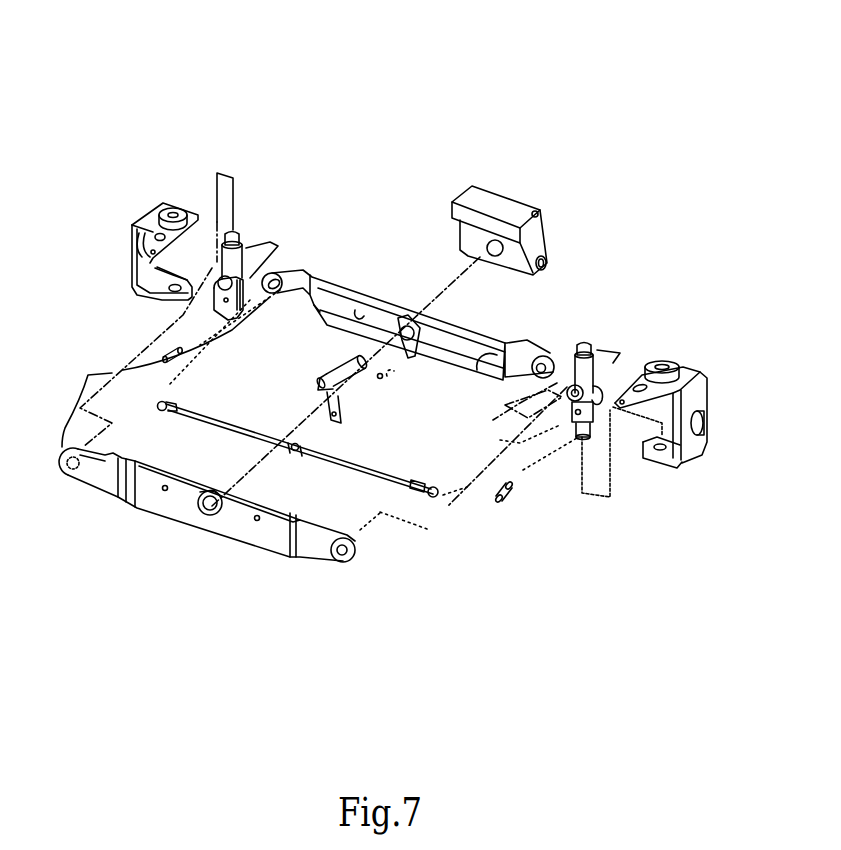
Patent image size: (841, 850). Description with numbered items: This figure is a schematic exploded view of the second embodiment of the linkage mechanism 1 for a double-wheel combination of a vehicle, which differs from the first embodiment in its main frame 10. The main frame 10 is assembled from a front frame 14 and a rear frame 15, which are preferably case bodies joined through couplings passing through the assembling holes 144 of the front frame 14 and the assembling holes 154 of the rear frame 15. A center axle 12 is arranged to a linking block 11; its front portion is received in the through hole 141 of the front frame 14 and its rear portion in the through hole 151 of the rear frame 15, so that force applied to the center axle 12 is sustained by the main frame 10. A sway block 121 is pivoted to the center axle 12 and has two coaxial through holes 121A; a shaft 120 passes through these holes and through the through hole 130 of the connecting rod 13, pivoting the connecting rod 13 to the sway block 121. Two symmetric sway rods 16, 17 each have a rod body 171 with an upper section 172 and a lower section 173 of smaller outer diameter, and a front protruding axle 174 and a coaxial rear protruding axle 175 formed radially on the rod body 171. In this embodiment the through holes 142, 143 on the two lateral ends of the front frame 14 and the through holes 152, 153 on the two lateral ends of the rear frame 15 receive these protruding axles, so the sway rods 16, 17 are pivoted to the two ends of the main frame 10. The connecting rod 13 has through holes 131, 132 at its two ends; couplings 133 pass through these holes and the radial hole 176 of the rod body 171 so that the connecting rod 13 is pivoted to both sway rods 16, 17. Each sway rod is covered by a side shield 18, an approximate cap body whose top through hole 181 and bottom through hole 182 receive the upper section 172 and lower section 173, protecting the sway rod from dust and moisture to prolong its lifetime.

The hinge assembly 1 is at (323, 168).
The main frame 10 is at (319, 376).
The linking block 11 is at (545, 210).
The center axle 12 is at (342, 372).
The shaft 120 is at (395, 376).
The sway block 121 is at (342, 415).
The through holes 121A is at (337, 410).
The connecting rod 13 is at (250, 417).
The through hole 130 is at (294, 450).
The through hole 131 is at (434, 496).
The through hole 132 is at (163, 410).
The couplings 133 is at (505, 500).
The front frame 14 is at (217, 542).
The through hole 141 is at (206, 505).
The through hole 142 is at (345, 553).
The through hole 143 is at (77, 473).
The assembling holes 144 is at (260, 520).
The rear frame 15 is at (460, 327).
The through hole 151 is at (405, 318).
The through hole 152 is at (537, 373).
The through hole 153 is at (276, 296).
The assembling holes 154 is at (477, 343).
The sway rod 16 is at (248, 240).
The sway rod 17 is at (602, 345).
The rod body 171 is at (603, 372).
The upper section 172 is at (574, 347).
The lower section 173 is at (575, 440).
The front protruding axle 174 is at (504, 428).
The rear protruding axle 175 is at (607, 384).
The radial hole 176 is at (580, 413).
The side shield 18 is at (126, 290).
The through hole 181 is at (665, 368).
The through hole 182 is at (677, 460).